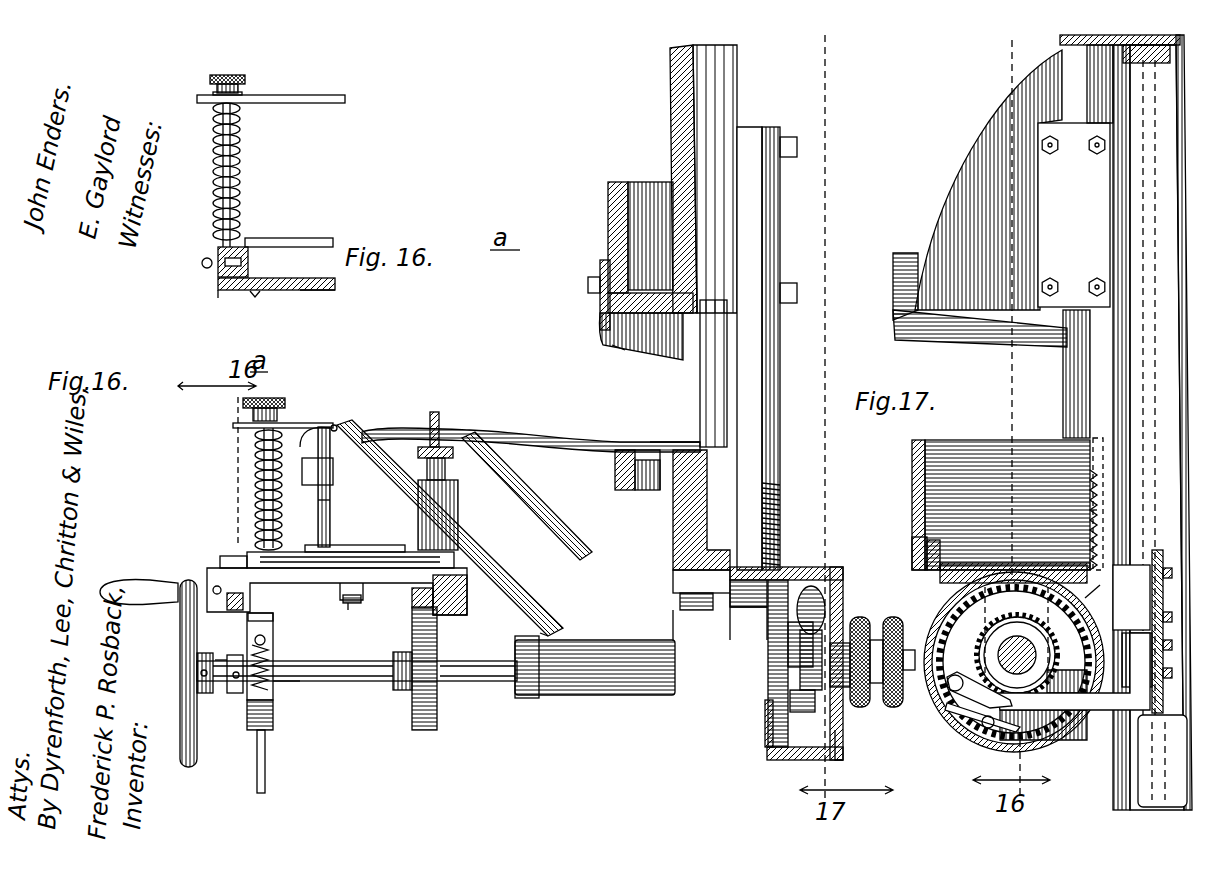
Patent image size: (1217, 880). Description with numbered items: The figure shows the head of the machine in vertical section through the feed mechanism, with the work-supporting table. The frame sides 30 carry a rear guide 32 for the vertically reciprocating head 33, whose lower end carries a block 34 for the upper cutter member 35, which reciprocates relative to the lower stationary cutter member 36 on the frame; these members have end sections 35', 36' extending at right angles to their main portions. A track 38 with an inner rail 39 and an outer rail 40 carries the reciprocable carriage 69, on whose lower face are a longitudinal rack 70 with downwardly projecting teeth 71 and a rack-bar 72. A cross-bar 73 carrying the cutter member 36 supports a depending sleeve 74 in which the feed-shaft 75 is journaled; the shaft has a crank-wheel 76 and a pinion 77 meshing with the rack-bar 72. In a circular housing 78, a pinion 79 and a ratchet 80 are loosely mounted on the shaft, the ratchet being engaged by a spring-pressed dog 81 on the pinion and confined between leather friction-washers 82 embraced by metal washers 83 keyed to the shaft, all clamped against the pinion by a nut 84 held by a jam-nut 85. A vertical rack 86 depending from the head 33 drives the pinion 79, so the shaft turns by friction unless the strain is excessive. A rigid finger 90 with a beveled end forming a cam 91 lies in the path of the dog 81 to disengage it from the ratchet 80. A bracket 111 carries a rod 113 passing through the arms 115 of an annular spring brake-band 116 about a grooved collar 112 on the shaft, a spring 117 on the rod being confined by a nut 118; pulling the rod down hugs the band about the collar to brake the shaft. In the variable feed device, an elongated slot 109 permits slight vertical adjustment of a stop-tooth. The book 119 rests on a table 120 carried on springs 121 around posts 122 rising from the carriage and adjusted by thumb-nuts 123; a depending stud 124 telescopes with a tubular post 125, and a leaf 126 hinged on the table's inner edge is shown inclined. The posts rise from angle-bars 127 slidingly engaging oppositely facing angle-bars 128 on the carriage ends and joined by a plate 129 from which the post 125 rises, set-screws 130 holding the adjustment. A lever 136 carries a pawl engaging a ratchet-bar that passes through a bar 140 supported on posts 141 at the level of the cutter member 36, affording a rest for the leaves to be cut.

In FIG. 16, the frame sides 30 is at (712, 365).
In FIG. 17, the frame sides 30 is at (1145, 765).
In FIG. 16, the rear guide 32 is at (728, 96).
In FIG. 16, the vertically reciprocating head 33 is at (672, 113).
In FIG. 17, the vertically reciprocating head 33 is at (968, 150).
In FIG. 16, the block 34 is at (612, 205).
In FIG. 16, the upper cutter member 35 is at (619, 335).
In FIG. 17, the upper cutter member 35 is at (956, 307).
In FIG. 16, the end-section of upper cutter member 35' is at (618, 365).
In FIG. 16, the lower stationary cutter-member 36 is at (612, 473).
In FIG. 17, the lower stationary cutter-member 36 is at (984, 504).
In FIG. 16, the end-section of lower cutter member 36' is at (675, 422).
In FIG. 16A, the track 38 is at (293, 280).
In FIG. 16, the track 38 is at (275, 578).
In FIG. 16, the inner rail 39 is at (505, 639).
In FIG. 16, the outer rail 40 is at (258, 597).
In FIG. 16, the carriage 69 is at (295, 552).
In FIG. 16A, the longitudinal rack 70 is at (316, 292).
In FIG. 16, the longitudinal rack 70 is at (342, 598).
In FIG. 16A, the teeth 71 is at (252, 315).
In FIG. 16, the teeth 71 is at (355, 619).
In FIG. 16, the rack-bar 72 is at (425, 595).
In FIG. 16, the cross-bar 73 is at (673, 525).
In FIG. 17, the cross-bar 73 is at (912, 525).
In FIG. 16, the elongated sleeve 74 is at (614, 695).
In FIG. 16, the feed-shaft 75 is at (348, 661).
In FIG. 17, the feed-shaft 75 is at (1038, 660).
In FIG. 16, the crank-wheel 76 is at (185, 585).
In FIG. 16, the pinion 77 is at (425, 730).
In FIG. 17, the circular housing 78 is at (940, 595).
In FIG. 16, the pinion 79 is at (772, 700).
In FIG. 17, the pinion 79 is at (1014, 661).
In FIG. 16, the ratchet 80 is at (747, 690).
In FIG. 17, the ratchet 80 is at (962, 722).
In FIG. 16, the spring-pressed dog 81 is at (767, 730).
In FIG. 17, the spring-pressed dog 81 is at (958, 692).
In FIG. 16, the friction-washers 82 is at (813, 578).
In FIG. 16, the metal washers 83 is at (790, 648).
In FIG. 17, the metal washers 83 is at (997, 652).
In FIG. 16, the nut 84 is at (860, 707).
In FIG. 16, the jam-nut 85 is at (895, 707).
In FIG. 16, the vertical rack 86 is at (765, 500).
In FIG. 17, the vertical rack 86 is at (1085, 598).
In FIG. 16, the rigid finger 90 is at (838, 718).
In FIG. 17, the rigid finger 90 is at (1047, 710).
In FIG. 17, the cam 91 is at (990, 729).
In FIG. 16, the elongated slot 109 is at (212, 592).
In FIG. 16, the bracket 111 is at (250, 628).
In FIG. 16, the peripherally grooved collar 112 is at (273, 700).
In FIG. 16, the rod 113 is at (257, 760).
In FIG. 16, the arms 115 is at (268, 645).
In FIG. 16, the annular spring brake-band 116 is at (250, 730).
In FIG. 16, the spring 117 is at (285, 683).
In FIG. 16, the nut 118 is at (250, 655).
In FIG. 16, the book 119 is at (366, 427).
In FIG. 16A, the table 120 is at (310, 95).
In FIG. 16, the table 120 is at (233, 428).
In FIG. 16A, the springs 121 is at (240, 128).
In FIG. 16, the springs 121 is at (255, 450).
In FIG. 16A, the posts 122 is at (240, 160).
In FIG. 16, the posts 122 is at (255, 470).
In FIG. 16A, the thumb-nuts 123 is at (235, 76).
In FIG. 16, the thumb-nuts 123 is at (280, 400).
In FIG. 16, the depending stud 124 is at (318, 416).
In FIG. 16, the tubular post 125 is at (331, 506).
In FIG. 16, the leaf 126 is at (385, 470).
In FIG. 16A, the angle-bars 127 is at (218, 254).
In FIG. 16A, the angle-bars 128 is at (248, 264).
In FIG. 16, the angle-bars 128 is at (232, 560).
In FIG. 16A, the plate 129 is at (311, 238).
In FIG. 16, the plate 129 is at (370, 545).
In FIG. 16A, the set-screws 130 is at (204, 266).
In FIG. 16, the lever 136 is at (434, 412).
In FIG. 16, the bar 140 is at (445, 448).
In FIG. 16, the posts 141 is at (458, 510).